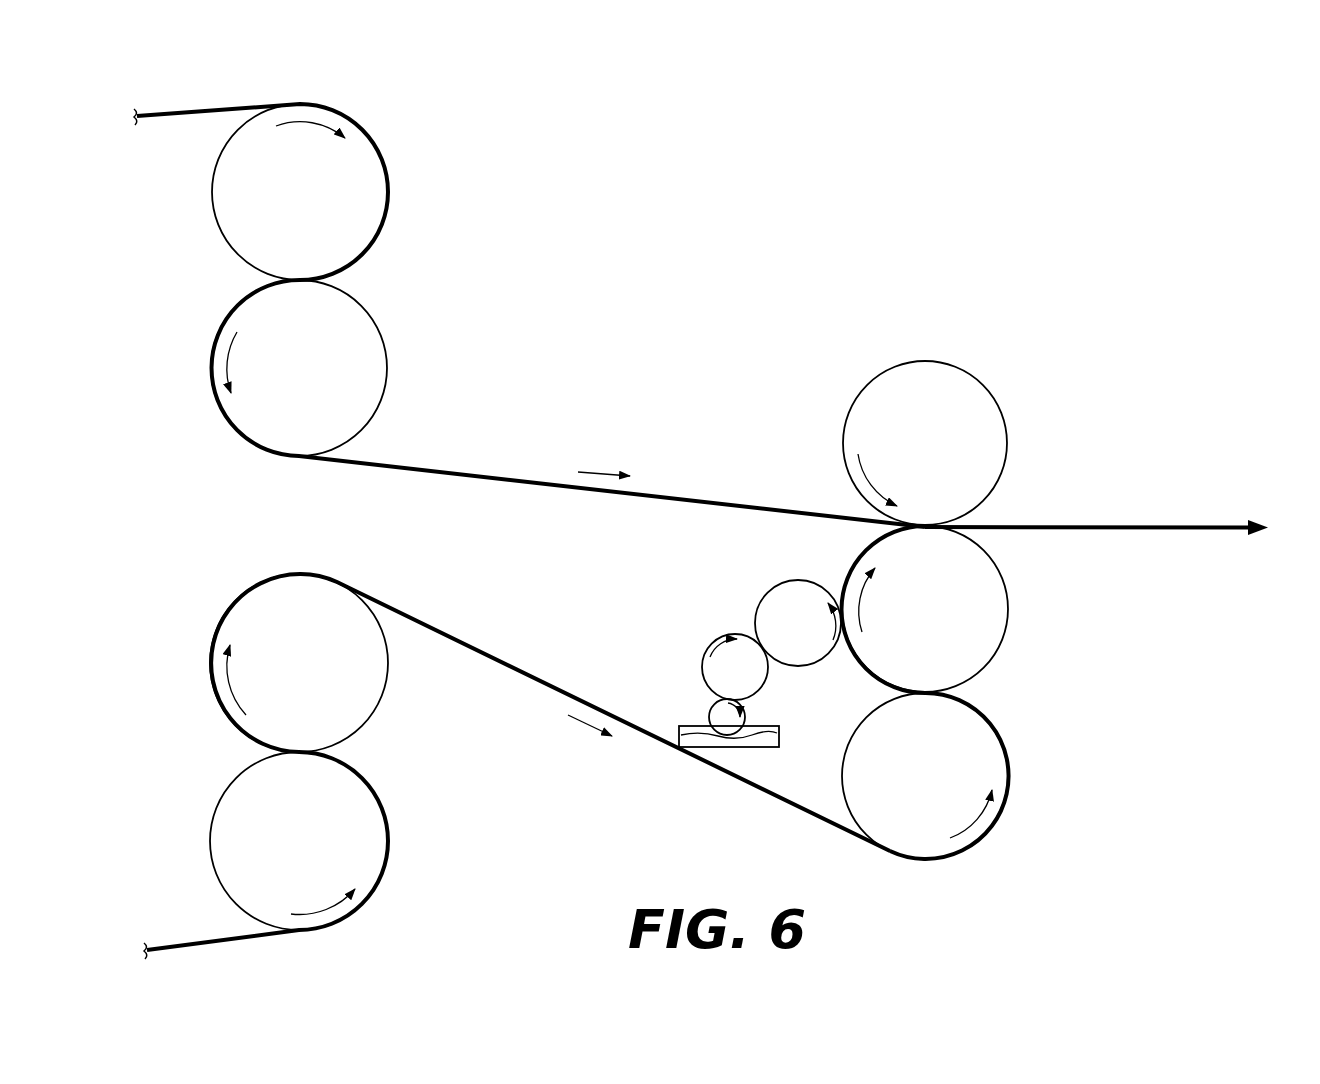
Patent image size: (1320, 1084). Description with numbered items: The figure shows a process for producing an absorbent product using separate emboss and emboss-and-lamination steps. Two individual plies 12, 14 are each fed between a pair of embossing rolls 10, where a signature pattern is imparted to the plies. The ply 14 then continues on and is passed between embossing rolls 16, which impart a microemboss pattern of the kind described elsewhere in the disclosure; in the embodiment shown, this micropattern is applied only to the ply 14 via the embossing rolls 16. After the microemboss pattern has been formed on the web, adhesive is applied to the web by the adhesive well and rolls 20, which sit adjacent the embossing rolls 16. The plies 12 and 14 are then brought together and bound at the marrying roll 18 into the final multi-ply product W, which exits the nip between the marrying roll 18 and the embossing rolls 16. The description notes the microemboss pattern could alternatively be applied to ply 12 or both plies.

The embossing rolls 10 is at (372, 188).
The ply 12 is at (193, 108).
The ply 14 is at (193, 938).
The embossing rolls 16 is at (993, 602).
The marrying roll 18 is at (993, 436).
The adhesive well and rolls 20 is at (712, 609).
The final multi-ply product W is at (1183, 527).